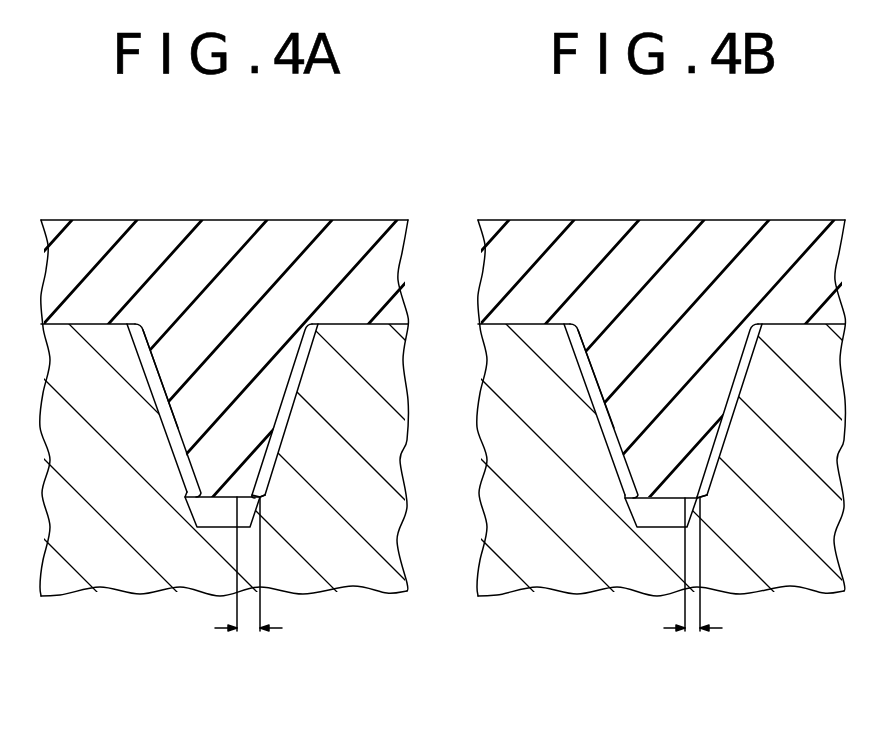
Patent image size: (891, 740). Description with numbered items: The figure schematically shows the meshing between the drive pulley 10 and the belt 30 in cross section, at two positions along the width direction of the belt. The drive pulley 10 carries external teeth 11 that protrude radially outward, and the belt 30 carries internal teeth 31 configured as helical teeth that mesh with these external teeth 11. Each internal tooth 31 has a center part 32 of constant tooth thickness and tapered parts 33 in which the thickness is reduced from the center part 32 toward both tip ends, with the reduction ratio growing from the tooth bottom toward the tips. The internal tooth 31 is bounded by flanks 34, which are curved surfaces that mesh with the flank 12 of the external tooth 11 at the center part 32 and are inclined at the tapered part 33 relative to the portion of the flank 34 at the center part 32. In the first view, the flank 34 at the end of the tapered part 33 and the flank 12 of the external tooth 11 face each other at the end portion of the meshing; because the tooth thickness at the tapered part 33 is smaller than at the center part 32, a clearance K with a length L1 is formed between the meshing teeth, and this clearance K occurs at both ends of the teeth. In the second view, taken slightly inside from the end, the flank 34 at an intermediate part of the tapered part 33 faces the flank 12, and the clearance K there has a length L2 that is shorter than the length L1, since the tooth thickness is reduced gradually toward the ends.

In FIG. 4A, the drive pulley 10 is at (135, 590).
In FIG. 4B, the drive pulley 10 is at (570, 590).
In FIG. 4A, the external teeth 11 is at (41, 322).
In FIG. 4B, the external teeth 11 is at (478, 322).
In FIG. 4A, the flank 12 is at (168, 457).
In FIG. 4B, the flank 12 is at (604, 456).
In FIG. 4A, the belt 30 is at (294, 228).
In FIG. 4B, the belt 30 is at (731, 228).
In FIG. 4A, the internal tooth 31 is at (176, 438).
In FIG. 4B, the internal tooth 31 is at (612, 437).
In FIG. 4A, the center part 32 is at (185, 499).
In FIG. 4B, the center part 32 is at (625, 500).
In FIG. 4A, the tapered part 33 is at (226, 502).
In FIG. 4B, the tapered part 33 is at (664, 502).
In FIG. 4A, the flank 34 is at (158, 385).
In FIG. 4B, the flank 34 is at (594, 386).
In FIG. 4A, the clearance K is at (260, 497).
In FIG. 4B, the clearance K is at (700, 497).
In FIG. 4A, the length of clearance at tooth end L1 is at (247, 633).
In FIG. 4B, the length of clearance at intermediate part L2 is at (692, 633).